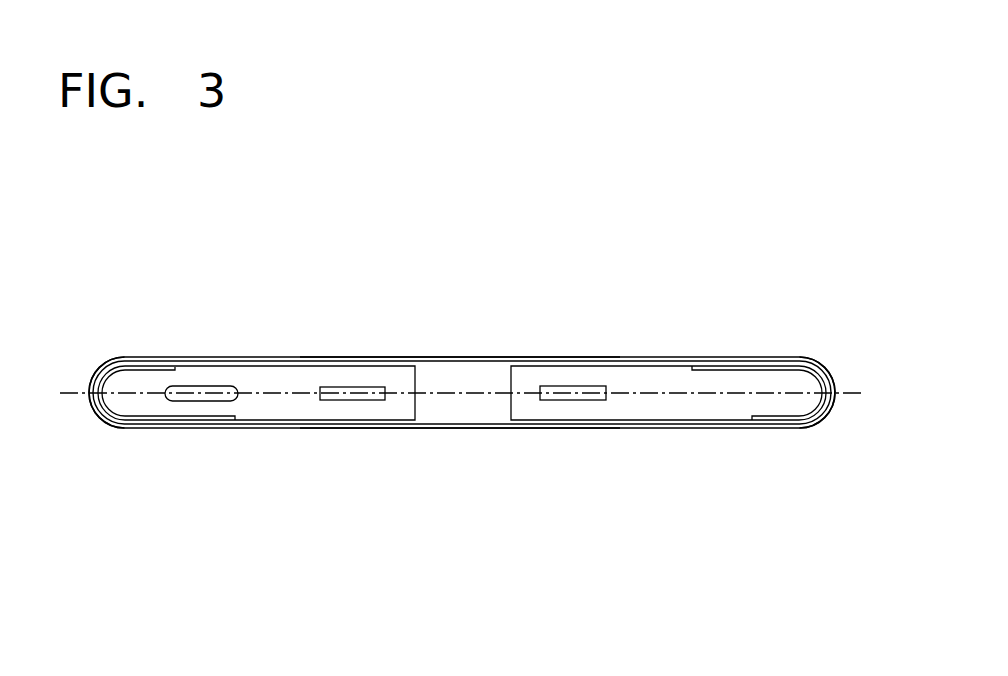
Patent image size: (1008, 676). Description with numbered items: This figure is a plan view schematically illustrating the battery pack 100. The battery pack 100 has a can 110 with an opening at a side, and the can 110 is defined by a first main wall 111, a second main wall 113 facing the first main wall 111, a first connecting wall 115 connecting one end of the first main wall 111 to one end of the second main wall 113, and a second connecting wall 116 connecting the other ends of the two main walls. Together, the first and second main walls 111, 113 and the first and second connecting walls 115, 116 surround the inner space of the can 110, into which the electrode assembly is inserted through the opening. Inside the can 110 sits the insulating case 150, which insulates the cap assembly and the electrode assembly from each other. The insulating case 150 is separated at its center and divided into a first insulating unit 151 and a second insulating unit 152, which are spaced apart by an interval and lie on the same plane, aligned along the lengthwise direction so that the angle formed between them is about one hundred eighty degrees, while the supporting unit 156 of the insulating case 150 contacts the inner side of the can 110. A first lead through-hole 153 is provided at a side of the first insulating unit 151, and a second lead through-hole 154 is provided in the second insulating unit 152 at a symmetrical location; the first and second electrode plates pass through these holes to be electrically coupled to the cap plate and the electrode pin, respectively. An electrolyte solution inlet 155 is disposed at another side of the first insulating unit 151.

The battery pack 100 is at (782, 267).
The can 110 is at (652, 352).
The first main wall 111 is at (467, 428).
The second main wall 113 is at (468, 358).
The first connecting wall 115 is at (836, 388).
The second connecting wall 116 is at (89, 391).
The insulating case 150 is at (474, 423).
The first insulating unit 151 is at (261, 382).
The second insulating unit 152 is at (720, 400).
The first lead through-hole 153 is at (358, 390).
The second lead through-hole 154 is at (577, 400).
The electrolyte solution inlet 155 is at (206, 400).
The supporting unit 156 is at (113, 365).